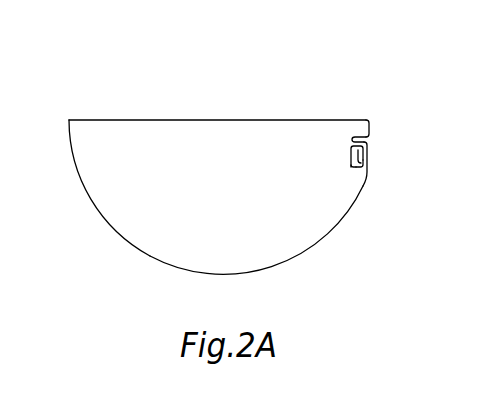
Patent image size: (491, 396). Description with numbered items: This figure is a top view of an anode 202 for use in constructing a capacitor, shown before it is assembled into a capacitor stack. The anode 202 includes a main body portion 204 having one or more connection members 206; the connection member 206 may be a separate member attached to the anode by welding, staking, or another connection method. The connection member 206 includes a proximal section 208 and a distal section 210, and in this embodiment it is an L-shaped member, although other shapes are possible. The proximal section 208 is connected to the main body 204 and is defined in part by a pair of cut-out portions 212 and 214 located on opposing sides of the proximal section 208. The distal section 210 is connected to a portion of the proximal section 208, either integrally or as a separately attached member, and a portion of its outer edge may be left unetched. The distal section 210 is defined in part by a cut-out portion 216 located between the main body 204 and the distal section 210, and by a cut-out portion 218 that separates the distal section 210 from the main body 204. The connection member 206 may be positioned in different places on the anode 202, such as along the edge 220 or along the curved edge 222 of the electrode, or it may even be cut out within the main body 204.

The anode 202 is at (126, 58).
The main body portion 204 is at (248, 252).
The connection member 206 is at (370, 146).
The proximal section 208 is at (361, 147).
The distal section 210 is at (366, 158).
The cut-out portion 212 is at (371, 130).
The cut-out portion 214 is at (354, 158).
The cut-out portion 216 is at (364, 171).
The cut-out portion 218 is at (358, 177).
The edge 220 is at (250, 119).
The curved edge 222 is at (114, 230).